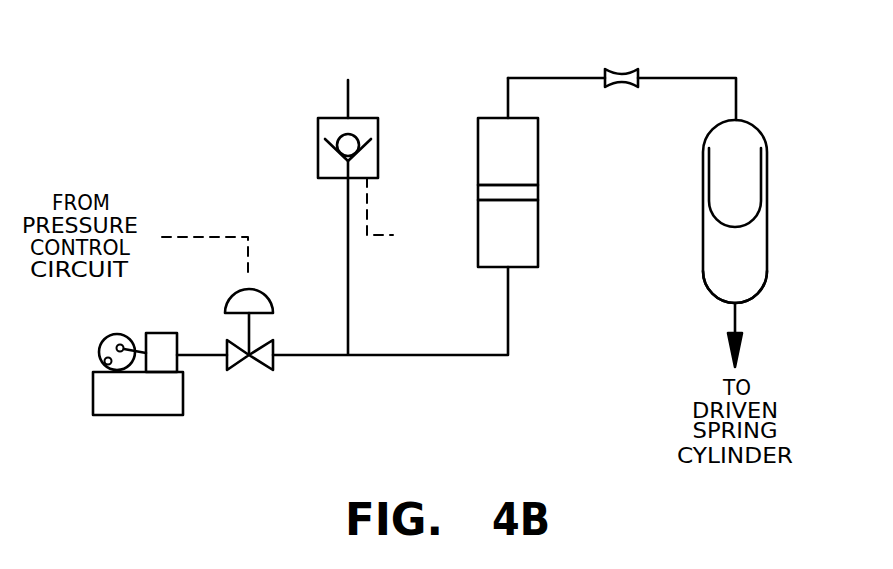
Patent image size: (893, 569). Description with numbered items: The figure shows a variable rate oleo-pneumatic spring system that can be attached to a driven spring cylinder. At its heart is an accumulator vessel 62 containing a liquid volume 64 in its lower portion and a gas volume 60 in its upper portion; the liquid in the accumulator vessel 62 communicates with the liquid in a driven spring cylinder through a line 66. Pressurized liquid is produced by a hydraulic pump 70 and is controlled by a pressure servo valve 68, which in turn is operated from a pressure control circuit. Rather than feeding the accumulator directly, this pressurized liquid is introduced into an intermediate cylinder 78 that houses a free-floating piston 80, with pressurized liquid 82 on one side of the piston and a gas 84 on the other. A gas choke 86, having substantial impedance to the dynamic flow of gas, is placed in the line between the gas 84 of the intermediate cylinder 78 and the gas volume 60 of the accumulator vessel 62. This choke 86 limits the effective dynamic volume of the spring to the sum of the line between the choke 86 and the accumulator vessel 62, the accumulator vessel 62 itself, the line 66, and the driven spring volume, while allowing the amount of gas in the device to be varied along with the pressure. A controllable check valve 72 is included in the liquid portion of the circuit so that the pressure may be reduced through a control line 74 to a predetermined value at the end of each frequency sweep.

The gas volume 60 is at (735, 187).
The accumulator vessel 62 is at (759, 195).
The liquid volume 64 is at (735, 278).
The line 66 is at (737, 323).
The pressure servo valve 68 is at (257, 295).
The hydraulic pump 70 is at (100, 348).
The controllable check valve 72 is at (328, 122).
The control line 74 is at (393, 207).
The intermediate cylinder 78 is at (537, 172).
The free-floating piston 80 is at (520, 195).
The pressurized liquid 82 is at (508, 233).
The gas 84 is at (508, 151).
The gas choke 86 is at (630, 70).